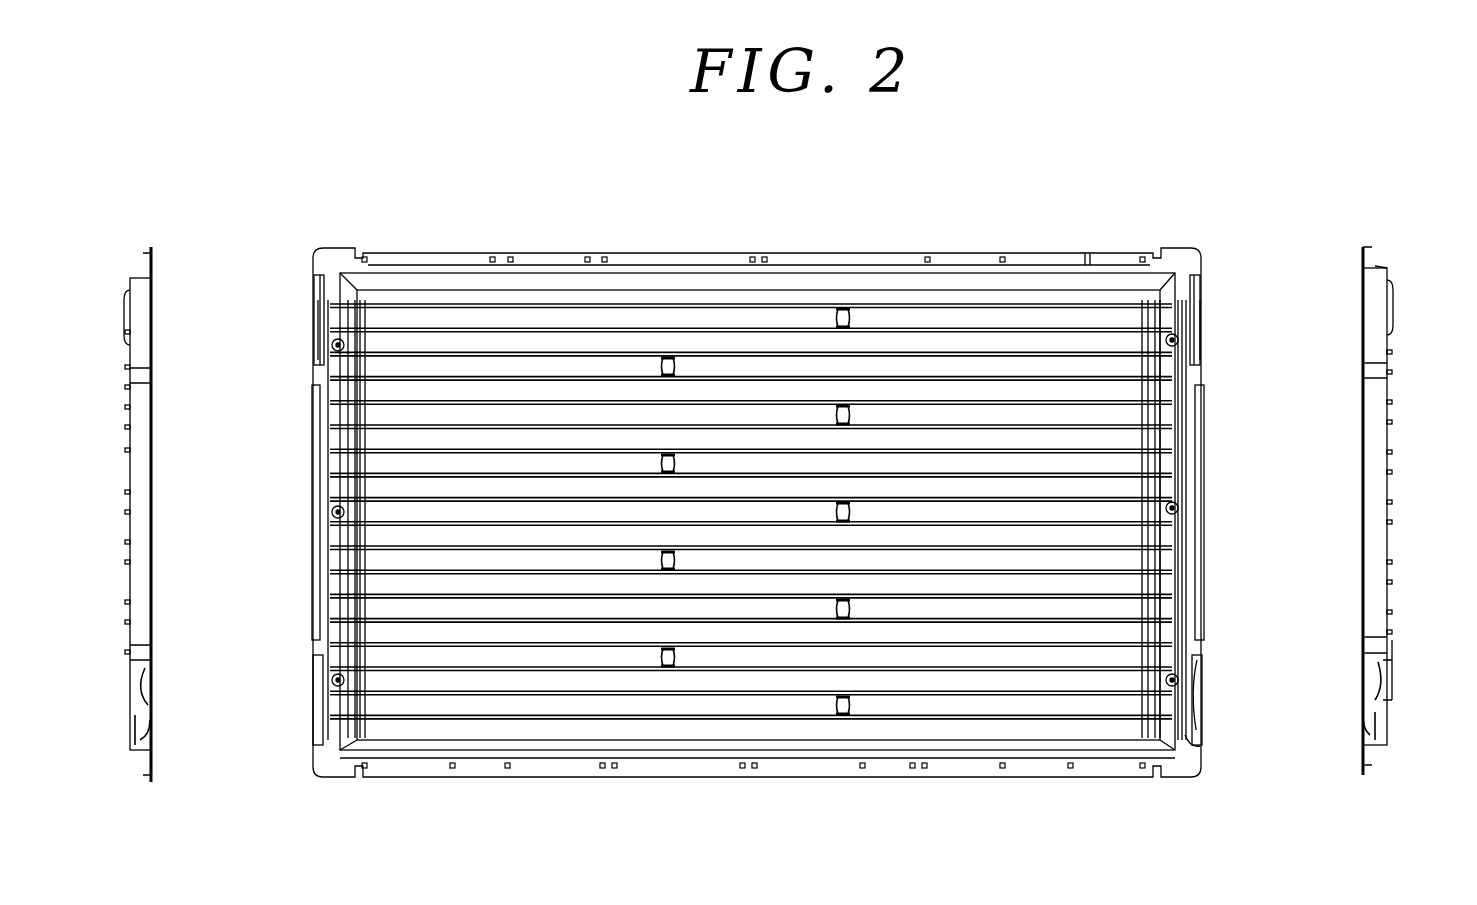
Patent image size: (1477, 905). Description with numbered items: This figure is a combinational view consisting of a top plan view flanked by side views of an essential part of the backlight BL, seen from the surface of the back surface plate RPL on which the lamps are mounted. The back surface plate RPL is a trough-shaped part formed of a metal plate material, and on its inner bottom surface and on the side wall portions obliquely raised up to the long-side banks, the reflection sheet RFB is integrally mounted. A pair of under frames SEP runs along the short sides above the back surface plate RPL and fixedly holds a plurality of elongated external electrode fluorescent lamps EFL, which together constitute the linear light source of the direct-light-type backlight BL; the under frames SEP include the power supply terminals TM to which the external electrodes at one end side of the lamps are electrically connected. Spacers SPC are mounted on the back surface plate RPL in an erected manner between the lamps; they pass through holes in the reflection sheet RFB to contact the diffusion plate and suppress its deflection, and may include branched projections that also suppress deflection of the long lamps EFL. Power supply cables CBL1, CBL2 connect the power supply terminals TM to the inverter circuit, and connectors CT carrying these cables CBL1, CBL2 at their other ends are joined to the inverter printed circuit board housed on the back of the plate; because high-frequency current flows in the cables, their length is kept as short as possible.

The backlight BL is at (441, 253).
The reflection sheet RFB is at (680, 318).
The back surface plate RPL is at (1091, 255).
The under frame SEP is at (330, 318).
The power supply terminal TM is at (1180, 463).
The connector CT is at (1392, 650).
The power supply cable CBL1 is at (150, 682).
The power supply cable CBL2 is at (148, 745).
The spacer SPC is at (840, 708).
The external electrode fluorescent lamp EFL is at (1117, 720).